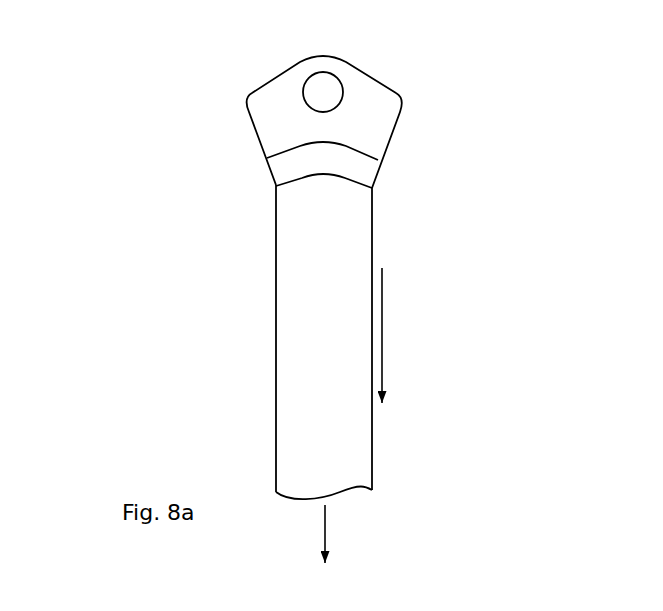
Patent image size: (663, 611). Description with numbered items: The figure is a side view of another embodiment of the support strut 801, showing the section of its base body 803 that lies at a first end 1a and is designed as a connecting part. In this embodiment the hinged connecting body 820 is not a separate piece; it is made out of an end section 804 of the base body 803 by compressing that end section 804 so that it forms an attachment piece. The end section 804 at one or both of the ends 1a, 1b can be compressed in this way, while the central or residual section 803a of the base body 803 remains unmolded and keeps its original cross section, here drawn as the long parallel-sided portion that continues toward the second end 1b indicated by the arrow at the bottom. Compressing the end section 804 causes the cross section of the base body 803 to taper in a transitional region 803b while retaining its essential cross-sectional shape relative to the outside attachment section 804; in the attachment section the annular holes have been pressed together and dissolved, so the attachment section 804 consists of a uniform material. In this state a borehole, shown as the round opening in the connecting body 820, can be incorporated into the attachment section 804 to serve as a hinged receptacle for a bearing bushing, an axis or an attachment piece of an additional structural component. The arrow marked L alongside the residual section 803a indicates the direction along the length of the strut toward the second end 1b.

The first end 1a is at (207, 132).
The second end 1b is at (341, 534).
The hinged connecting body 820 is at (257, 90).
The end section 804 is at (255, 153).
The transitional region 803b is at (275, 182).
The support strut 801 is at (237, 278).
The central or residual section 803a is at (277, 327).
The base body 803 is at (372, 238).
The length L is at (394, 335).